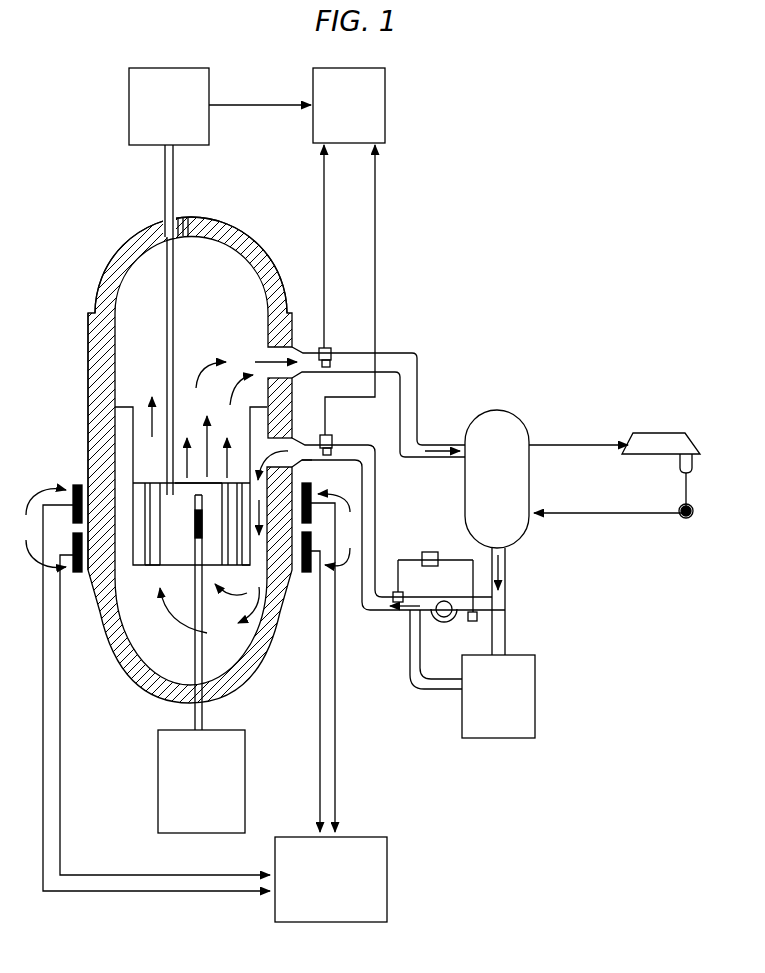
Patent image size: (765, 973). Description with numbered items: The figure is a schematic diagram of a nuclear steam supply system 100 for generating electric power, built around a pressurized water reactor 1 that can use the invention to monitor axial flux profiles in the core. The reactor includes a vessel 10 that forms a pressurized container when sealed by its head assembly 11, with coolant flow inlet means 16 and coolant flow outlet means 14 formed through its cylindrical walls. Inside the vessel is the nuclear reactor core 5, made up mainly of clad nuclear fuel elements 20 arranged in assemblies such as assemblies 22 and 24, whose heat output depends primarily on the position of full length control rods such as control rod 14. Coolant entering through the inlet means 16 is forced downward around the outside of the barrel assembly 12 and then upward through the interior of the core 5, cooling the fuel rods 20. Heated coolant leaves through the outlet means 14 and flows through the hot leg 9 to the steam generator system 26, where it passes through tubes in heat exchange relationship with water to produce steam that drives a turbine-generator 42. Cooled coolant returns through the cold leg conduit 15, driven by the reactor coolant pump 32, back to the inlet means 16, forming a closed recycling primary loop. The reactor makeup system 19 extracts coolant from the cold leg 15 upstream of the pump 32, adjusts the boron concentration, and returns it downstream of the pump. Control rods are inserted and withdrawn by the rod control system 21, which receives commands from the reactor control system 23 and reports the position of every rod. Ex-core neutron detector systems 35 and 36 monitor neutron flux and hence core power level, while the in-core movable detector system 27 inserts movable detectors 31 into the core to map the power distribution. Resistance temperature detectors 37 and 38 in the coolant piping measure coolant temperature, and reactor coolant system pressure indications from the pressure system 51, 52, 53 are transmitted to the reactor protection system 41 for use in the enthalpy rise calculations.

The nuclear steam supply system 100 is at (57, 45).
The pressurized water reactor 1 is at (131, 690).
The nuclear reactor core 5 is at (210, 545).
The hot leg 9 is at (404, 353).
The vessel 10 is at (88, 407).
The head assembly 11 is at (239, 222).
The barrel assembly 12 is at (133, 566).
The control rod 14 is at (167, 305).
The cold leg conduit 15 is at (376, 500).
The coolant flow inlet means 16 is at (303, 462).
The reactor makeup system 19 is at (535, 700).
The clad nuclear fuel elements 20 is at (222, 503).
The rod control system 21 is at (173, 68).
The fuel assembly 22 is at (232, 566).
The reactor control system 23 is at (387, 90).
The fuel assembly 24 is at (156, 566).
The steam generator system 26 is at (466, 496).
The in-core movable detector system 27 is at (246, 743).
The movable detectors 31 is at (193, 527).
The reactor coolant pump 32 is at (448, 601).
The ex-core neutron detector system 35 is at (37, 541).
The ex-core neutron detector system 36 is at (360, 542).
The temperature detector 37 is at (333, 355).
The temperature detector 38 is at (333, 443).
The reactor protection system 41 is at (388, 872).
The turbine-generator 42 is at (670, 433).
The pressure system 51 is at (472, 621).
The pressure system 52 is at (402, 593).
The pressure system 53 is at (428, 552).